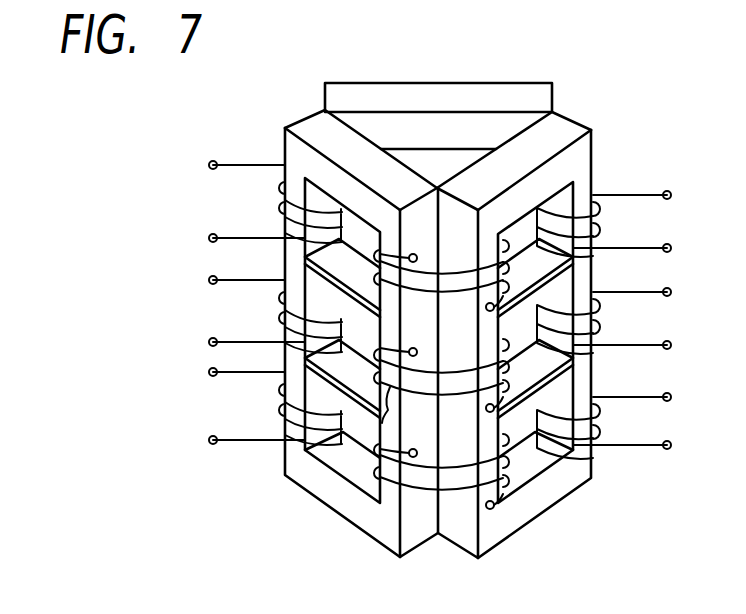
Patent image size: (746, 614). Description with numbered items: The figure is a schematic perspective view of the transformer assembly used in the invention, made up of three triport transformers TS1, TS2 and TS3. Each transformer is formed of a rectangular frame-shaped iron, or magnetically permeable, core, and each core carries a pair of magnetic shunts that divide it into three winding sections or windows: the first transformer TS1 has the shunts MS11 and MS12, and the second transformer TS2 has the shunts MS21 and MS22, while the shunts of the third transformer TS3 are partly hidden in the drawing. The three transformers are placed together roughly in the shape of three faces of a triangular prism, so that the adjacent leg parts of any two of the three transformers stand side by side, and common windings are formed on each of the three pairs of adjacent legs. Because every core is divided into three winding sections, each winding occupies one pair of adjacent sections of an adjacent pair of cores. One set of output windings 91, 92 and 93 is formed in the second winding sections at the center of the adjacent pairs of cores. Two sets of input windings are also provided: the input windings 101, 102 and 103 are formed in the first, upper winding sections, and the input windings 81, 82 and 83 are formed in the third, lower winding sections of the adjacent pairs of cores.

The triport transformer TS1 is at (302, 122).
The triport transformer TS2 is at (565, 128).
The triport transformer TS3 is at (540, 92).
The magnetic shunt MS11 is at (320, 257).
The magnetic shunt MS12 is at (327, 352).
The magnetic shunt MS21 is at (567, 277).
The magnetic shunt MS22 is at (570, 377).
The input winding 101 is at (430, 267).
The input winding 102 is at (600, 214).
The input winding 103 is at (278, 190).
The output winding 91 is at (370, 427).
The output winding 92 is at (603, 312).
The output winding 93 is at (278, 300).
The input winding 81 is at (423, 495).
The input winding 82 is at (603, 415).
The input winding 83 is at (278, 398).